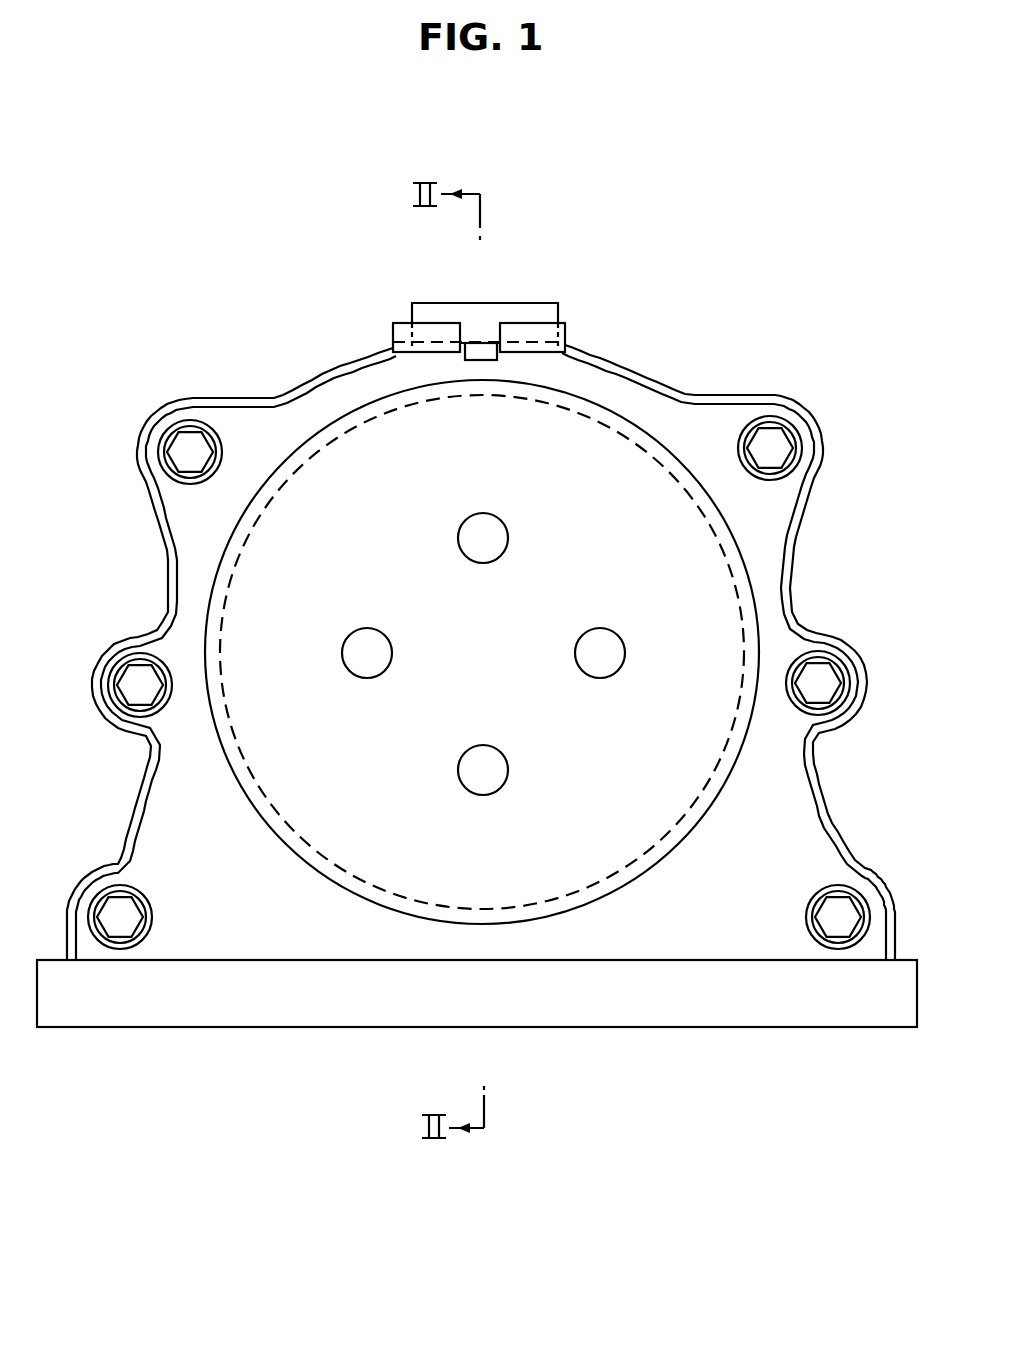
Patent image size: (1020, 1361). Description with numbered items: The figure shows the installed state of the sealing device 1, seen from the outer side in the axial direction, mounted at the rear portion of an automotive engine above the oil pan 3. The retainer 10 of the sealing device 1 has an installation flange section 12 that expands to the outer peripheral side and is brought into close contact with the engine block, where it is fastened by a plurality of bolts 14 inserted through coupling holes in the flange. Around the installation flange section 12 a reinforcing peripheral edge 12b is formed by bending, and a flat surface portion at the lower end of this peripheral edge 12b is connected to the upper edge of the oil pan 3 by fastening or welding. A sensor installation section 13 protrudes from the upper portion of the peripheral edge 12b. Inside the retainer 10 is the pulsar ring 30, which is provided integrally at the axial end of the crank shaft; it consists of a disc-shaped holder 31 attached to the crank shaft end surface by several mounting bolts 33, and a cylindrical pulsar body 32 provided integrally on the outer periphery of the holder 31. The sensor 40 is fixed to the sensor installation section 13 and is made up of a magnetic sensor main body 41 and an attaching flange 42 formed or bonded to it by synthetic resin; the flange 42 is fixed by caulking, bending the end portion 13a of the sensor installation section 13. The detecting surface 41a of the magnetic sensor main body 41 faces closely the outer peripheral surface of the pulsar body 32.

The sealing device 1 is at (665, 358).
The oil pan 3 is at (618, 995).
The retainer 10 is at (720, 432).
The installation flange section 12 is at (235, 430).
The peripheral edge 12b is at (162, 570).
The sensor installation section 13 is at (548, 345).
The end portion of the sensor installation section 13a is at (430, 330).
The bolts 14 is at (775, 450).
The pulsar ring 30 is at (362, 482).
The holder 31 is at (342, 820).
The pulsar body 32 is at (373, 414).
The mounting bolts 33 is at (480, 527).
The sensor 40 is at (533, 306).
The magnetic sensor main body 41 is at (478, 350).
The detecting surface 41a is at (482, 360).
The attaching flange 42 is at (503, 322).